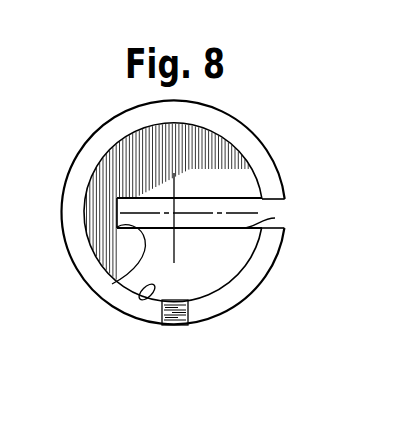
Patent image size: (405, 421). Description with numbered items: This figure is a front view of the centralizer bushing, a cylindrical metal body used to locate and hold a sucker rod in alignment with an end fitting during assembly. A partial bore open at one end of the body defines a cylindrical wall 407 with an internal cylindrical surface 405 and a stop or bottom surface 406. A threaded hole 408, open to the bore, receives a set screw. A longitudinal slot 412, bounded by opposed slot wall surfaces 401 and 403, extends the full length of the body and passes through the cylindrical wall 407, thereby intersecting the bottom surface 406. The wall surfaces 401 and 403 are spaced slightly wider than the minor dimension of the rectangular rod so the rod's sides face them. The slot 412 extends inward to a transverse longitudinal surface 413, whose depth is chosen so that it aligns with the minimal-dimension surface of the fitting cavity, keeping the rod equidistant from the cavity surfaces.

The slot wall surface 401 is at (216, 213).
The slot wall surface 403 is at (275, 218).
The internal cylindrical surface 405 is at (140, 301).
The bottom surface 406 is at (238, 253).
The cylindrical wall 407 is at (248, 283).
The threaded hole 408 is at (190, 316).
The longitudinal slot 412 is at (280, 217).
The transverse longitudinal surface 413 is at (112, 284).